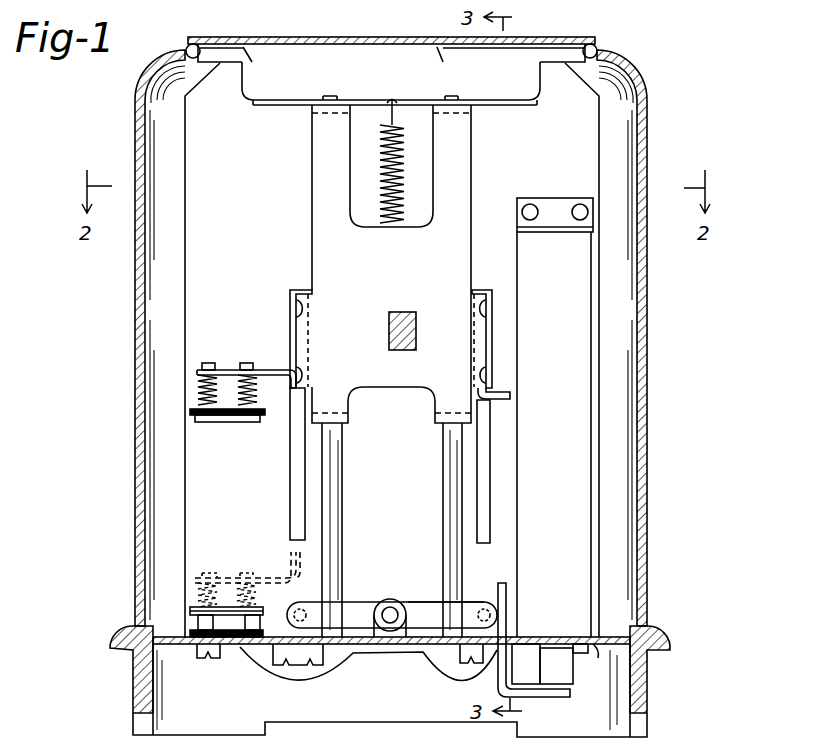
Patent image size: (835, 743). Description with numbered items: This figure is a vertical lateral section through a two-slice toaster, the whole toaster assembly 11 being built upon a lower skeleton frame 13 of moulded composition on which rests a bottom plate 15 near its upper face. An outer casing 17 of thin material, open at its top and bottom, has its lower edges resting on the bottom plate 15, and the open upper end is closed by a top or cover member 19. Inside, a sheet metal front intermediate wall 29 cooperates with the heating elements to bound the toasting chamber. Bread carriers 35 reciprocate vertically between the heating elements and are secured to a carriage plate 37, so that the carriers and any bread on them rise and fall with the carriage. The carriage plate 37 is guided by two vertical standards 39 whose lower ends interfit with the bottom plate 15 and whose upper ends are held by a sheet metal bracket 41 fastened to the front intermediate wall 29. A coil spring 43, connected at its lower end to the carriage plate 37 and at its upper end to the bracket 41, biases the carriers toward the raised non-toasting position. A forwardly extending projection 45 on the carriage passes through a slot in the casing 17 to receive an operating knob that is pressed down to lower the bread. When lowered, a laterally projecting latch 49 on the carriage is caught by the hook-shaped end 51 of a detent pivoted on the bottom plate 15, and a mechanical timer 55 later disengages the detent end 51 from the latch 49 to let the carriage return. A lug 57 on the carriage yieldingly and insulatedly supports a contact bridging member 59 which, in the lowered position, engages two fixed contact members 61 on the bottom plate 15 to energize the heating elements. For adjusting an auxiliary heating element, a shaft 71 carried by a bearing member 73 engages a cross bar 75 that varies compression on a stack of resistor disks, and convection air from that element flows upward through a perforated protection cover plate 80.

The toaster assembly 11 is at (689, 151).
The lower skeleton frame 13 is at (648, 697).
The bottom plate 15 is at (600, 658).
The outer casing 17 is at (645, 377).
The top or cover member 19 is at (562, 44).
The front intermediate wall 29 is at (185, 246).
The bread carriers 35 is at (297, 328).
The carriage plate 37 is at (475, 192).
The vertical standards 39 is at (442, 472).
The sheet metal bracket 41 is at (517, 107).
The coil spring 43 is at (380, 183).
The forwardly extending projection 45 is at (388, 333).
The laterally projecting latch 49 is at (503, 400).
The hook-shaped end of detent 51 is at (503, 593).
The mechanical timer 55 is at (578, 473).
The projection or lug 57 is at (227, 363).
The contact bridging member 59 is at (232, 423).
The fixed contact members 61 is at (195, 623).
The shaft 71 is at (390, 598).
The bearing member 73 is at (412, 602).
The cross bar 75 is at (352, 602).
The perforated protection cover plate 80 is at (348, 667).